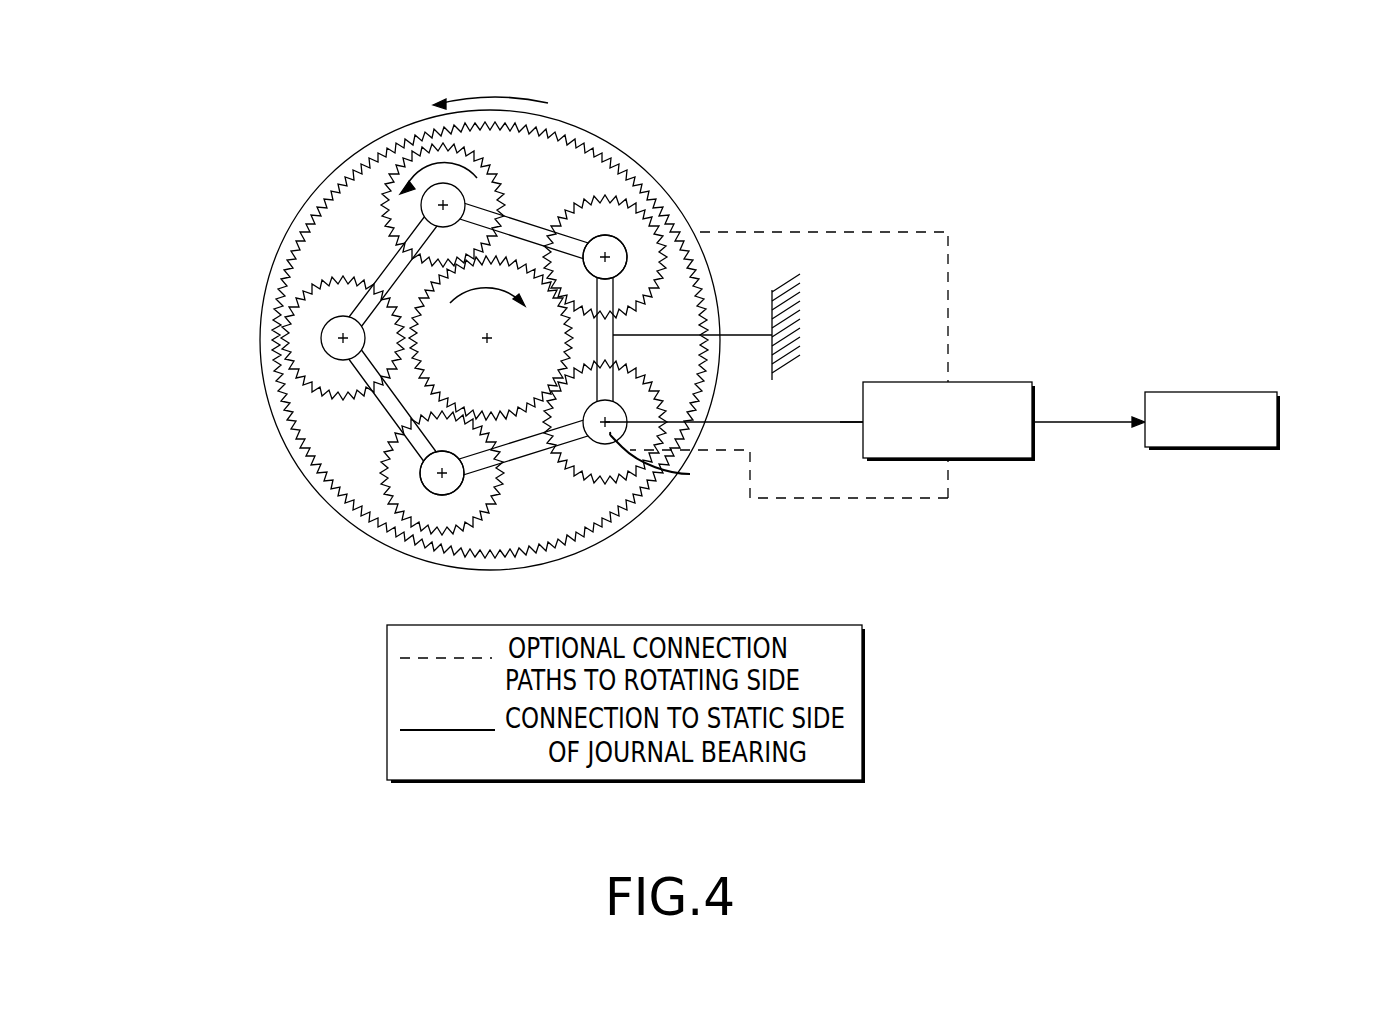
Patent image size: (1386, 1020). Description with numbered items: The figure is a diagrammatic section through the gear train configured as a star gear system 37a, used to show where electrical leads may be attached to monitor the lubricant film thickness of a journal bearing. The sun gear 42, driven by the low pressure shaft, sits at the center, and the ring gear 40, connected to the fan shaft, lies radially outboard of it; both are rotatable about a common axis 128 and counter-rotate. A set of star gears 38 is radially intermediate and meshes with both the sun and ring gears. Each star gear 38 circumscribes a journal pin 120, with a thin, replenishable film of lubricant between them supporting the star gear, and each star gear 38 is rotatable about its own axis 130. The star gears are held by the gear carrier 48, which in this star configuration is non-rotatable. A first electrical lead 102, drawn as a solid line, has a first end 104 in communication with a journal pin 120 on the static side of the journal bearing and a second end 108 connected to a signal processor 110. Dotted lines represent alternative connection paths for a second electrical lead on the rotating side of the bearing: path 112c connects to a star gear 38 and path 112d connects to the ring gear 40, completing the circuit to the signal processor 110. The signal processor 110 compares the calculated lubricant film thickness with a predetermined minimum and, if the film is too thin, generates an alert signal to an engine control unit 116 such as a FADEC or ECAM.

The star gear system 37a is at (725, 88).
The ring gear 40 is at (707, 270).
The sun gear 42 is at (455, 318).
The axis 128 is at (487, 346).
The star gear 38 is at (488, 194).
The gear carrier 48 is at (612, 290).
The journal pin 120 is at (424, 205).
The axes 130 is at (587, 225).
The second electrical lead 112d is at (890, 228).
The second electrical lead 112c is at (850, 500).
The first end 104 is at (674, 462).
The first electrical lead 102 is at (790, 424).
The second end 108 is at (857, 418).
The signal processor 110 is at (1018, 380).
The engine control unit 116 is at (1200, 392).